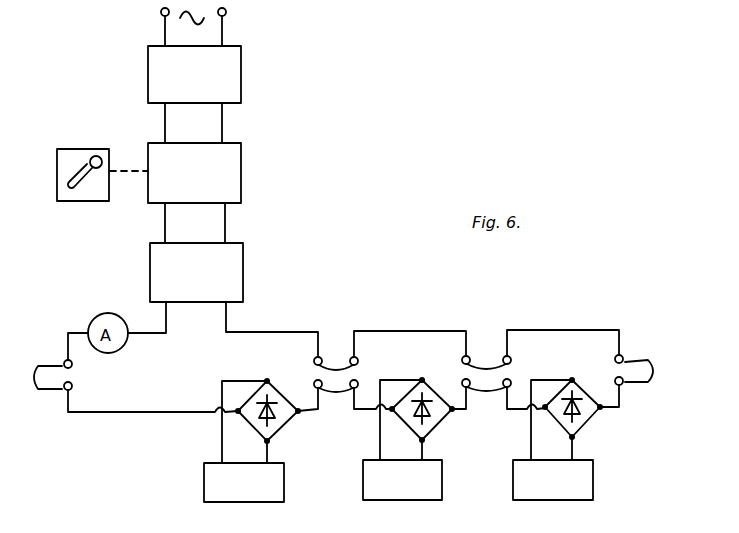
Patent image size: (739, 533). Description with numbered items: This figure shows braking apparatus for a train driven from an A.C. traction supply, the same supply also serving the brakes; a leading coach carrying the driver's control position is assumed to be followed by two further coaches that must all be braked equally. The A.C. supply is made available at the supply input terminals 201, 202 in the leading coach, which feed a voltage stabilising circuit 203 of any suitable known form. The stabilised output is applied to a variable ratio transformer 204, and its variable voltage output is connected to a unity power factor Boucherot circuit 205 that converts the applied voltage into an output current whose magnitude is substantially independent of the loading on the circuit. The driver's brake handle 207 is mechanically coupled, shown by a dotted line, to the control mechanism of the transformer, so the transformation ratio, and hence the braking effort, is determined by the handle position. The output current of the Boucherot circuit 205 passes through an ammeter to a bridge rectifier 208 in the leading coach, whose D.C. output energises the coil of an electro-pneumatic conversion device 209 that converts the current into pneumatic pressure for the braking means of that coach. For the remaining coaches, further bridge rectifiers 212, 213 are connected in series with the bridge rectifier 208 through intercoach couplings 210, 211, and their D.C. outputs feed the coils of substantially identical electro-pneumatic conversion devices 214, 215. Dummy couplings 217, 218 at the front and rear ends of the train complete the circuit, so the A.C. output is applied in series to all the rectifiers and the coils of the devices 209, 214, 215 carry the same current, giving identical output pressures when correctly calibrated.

The supply input terminal 201 is at (158, 11).
The supply input terminal 202 is at (227, 14).
The voltage stabilising circuit 203 is at (243, 72).
The variable ratio transformer 204 is at (240, 178).
The unity power factor Boucherot circuit 205 is at (240, 276).
The driver's brake handle 207 is at (81, 150).
The bridge rectifier 208 is at (281, 421).
The electro-pneumatic conversion device 209 is at (284, 483).
The intercoach coupling 210 is at (334, 359).
The intercoach coupling 211 is at (485, 359).
The bridge rectifier 212 is at (437, 420).
The bridge rectifier 213 is at (588, 418).
The electro-pneumatic conversion device 214 is at (442, 480).
The electro-pneumatic conversion device 215 is at (593, 478).
The dummy coupling 217 is at (46, 365).
The dummy coupling 218 is at (637, 360).